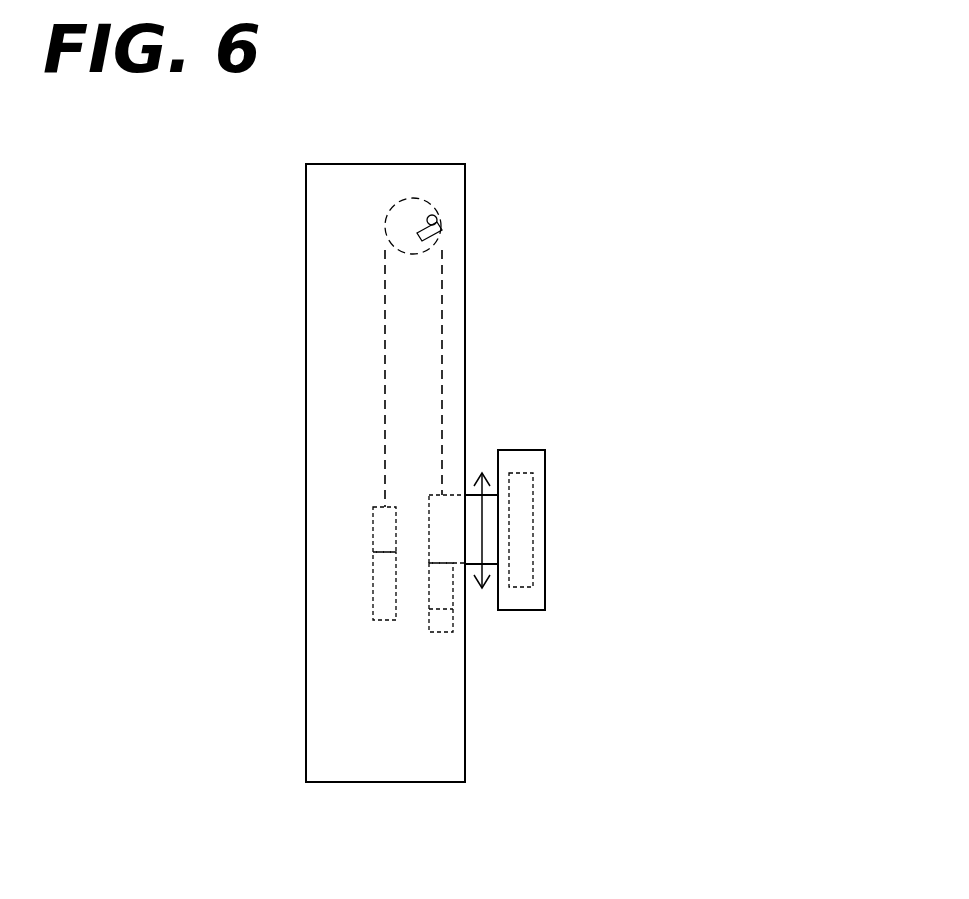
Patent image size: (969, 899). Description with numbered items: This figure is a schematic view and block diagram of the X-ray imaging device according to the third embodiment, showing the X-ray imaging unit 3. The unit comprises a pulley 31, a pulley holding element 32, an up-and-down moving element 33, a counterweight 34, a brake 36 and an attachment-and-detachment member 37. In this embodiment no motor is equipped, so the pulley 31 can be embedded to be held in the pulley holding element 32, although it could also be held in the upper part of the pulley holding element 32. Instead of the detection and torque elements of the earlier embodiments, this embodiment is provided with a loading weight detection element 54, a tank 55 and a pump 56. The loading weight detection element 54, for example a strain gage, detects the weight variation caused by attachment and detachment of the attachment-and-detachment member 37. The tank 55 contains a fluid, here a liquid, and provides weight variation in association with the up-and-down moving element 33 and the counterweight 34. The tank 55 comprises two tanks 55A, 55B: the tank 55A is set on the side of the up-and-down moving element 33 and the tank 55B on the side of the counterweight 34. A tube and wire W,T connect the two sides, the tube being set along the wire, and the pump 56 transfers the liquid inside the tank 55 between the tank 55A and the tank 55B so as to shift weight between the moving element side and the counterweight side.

The X-ray imaging unit 3 is at (444, 473).
The pulley 31 is at (426, 205).
The pulley holding element 32 is at (314, 377).
The up-and-down moving element 33 is at (522, 456).
The counterweight 34 is at (380, 578).
The brake 36 is at (445, 219).
The attachment-and-detachment member 37 is at (528, 520).
The loading weight detection element 54 is at (400, 256).
The tank 55 is at (419, 691).
The tank located in the up-and-down moving element side 55A is at (437, 590).
The tank located in the counterweight side 55B is at (380, 528).
The pump 56 is at (443, 633).
The wire and tube W,T is at (394, 366).